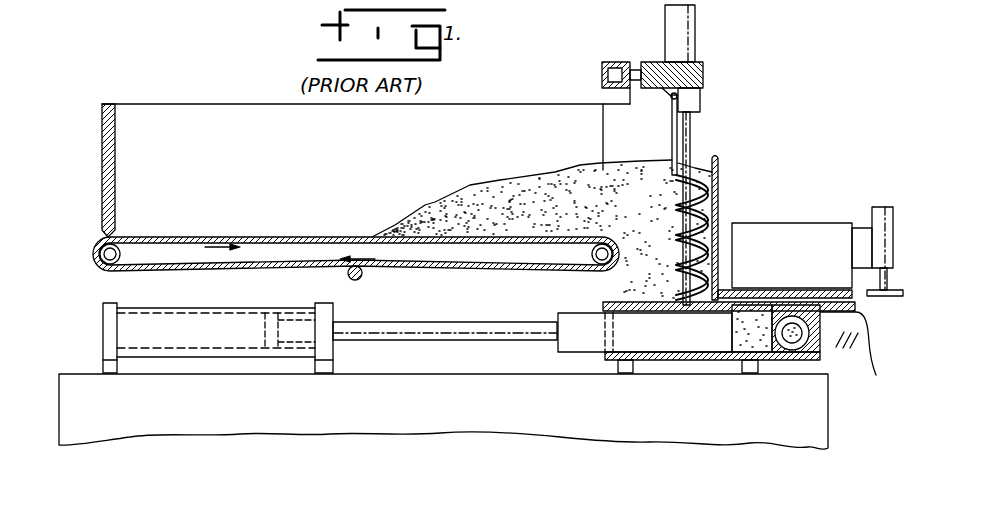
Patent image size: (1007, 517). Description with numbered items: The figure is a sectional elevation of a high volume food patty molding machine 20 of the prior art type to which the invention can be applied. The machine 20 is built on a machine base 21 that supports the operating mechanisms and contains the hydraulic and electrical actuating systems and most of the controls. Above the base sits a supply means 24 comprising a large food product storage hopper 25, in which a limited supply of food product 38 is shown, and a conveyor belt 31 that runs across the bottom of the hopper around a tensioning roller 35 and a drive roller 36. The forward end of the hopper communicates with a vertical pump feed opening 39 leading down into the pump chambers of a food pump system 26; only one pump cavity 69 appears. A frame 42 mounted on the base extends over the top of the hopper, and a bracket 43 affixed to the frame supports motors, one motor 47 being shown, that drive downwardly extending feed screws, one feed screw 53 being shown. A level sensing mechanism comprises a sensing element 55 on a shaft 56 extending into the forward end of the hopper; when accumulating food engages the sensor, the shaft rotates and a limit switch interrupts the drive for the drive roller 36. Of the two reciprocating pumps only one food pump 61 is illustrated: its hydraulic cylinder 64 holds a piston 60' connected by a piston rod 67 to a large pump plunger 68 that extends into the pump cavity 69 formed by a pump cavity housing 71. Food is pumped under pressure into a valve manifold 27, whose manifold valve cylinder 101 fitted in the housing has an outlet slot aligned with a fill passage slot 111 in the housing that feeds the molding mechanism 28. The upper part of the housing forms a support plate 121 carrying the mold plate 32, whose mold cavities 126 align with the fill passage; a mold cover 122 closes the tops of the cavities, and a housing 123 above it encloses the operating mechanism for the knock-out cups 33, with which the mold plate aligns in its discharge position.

The food patty molding machine 20 is at (744, 163).
The machine base 21 is at (172, 435).
The supply means 24 is at (644, 58).
The food product storage hopper 25 is at (262, 82).
The food pump system 26 is at (484, 349).
The valve manifold 27 is at (782, 372).
The molding mechanism 28 is at (810, 185).
The conveyor belt 31 is at (530, 276).
The mold plate 32 is at (863, 300).
The knock-out cups 33 is at (903, 297).
The tensioning roller 35 is at (100, 268).
The drive roller 36 is at (588, 268).
The food product 38 is at (490, 178).
The vertical pump feed opening 39 is at (660, 206).
The frame 42 is at (602, 75).
The bracket 43 is at (703, 71).
The motor 47 is at (697, 30).
The feed screw 53 is at (717, 224).
The sensing element 55 is at (670, 137).
The shaft 56 is at (671, 99).
The piston 60' is at (218, 345).
The food pump 61 is at (340, 313).
The hydraulic cylinder 64 is at (200, 315).
The piston rod 67 is at (448, 322).
The pump plunger 68 is at (560, 345).
The pump cavity 69 is at (745, 350).
The pump cavity housing 71 is at (668, 361).
The manifold valve cylinder 101 is at (810, 360).
The fill passage slot 111 is at (822, 315).
The support plate 121 is at (832, 302).
The mold cover 122 is at (762, 297).
The housing 123 is at (858, 207).
The mold cavities 126 is at (803, 318).